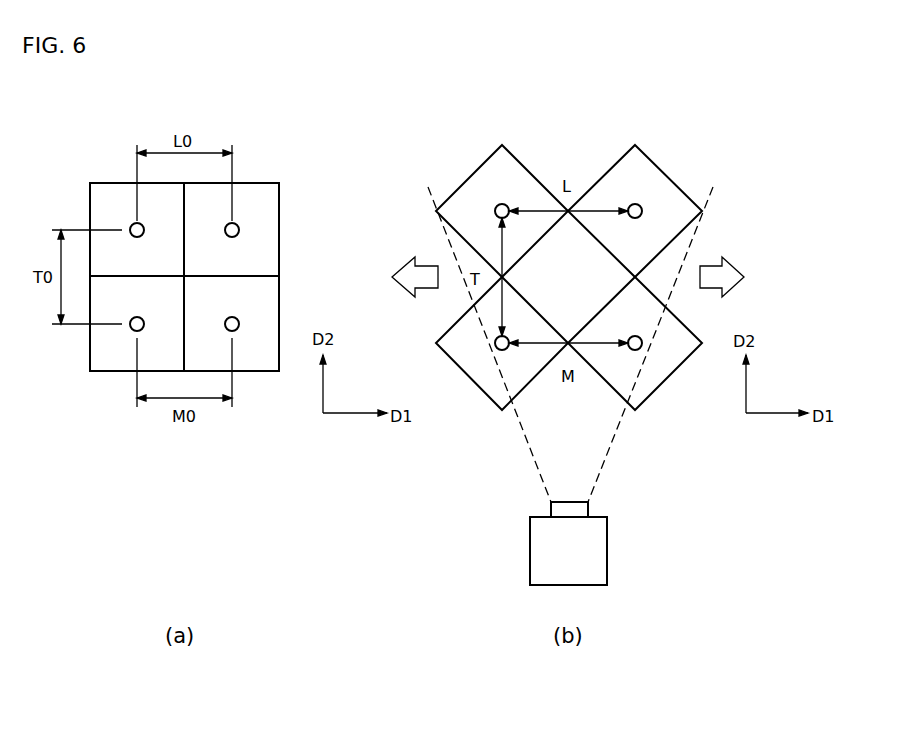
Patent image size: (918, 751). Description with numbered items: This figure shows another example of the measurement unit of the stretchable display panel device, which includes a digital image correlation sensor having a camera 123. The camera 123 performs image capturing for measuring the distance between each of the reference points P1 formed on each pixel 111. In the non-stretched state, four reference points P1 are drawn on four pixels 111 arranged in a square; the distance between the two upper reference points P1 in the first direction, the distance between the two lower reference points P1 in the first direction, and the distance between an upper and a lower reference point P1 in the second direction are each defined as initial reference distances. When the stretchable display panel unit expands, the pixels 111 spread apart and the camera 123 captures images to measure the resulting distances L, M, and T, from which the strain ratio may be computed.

The pixel 111 is at (92, 207).
The reference point P1 is at (133, 225).
The camera 123 is at (607, 547).